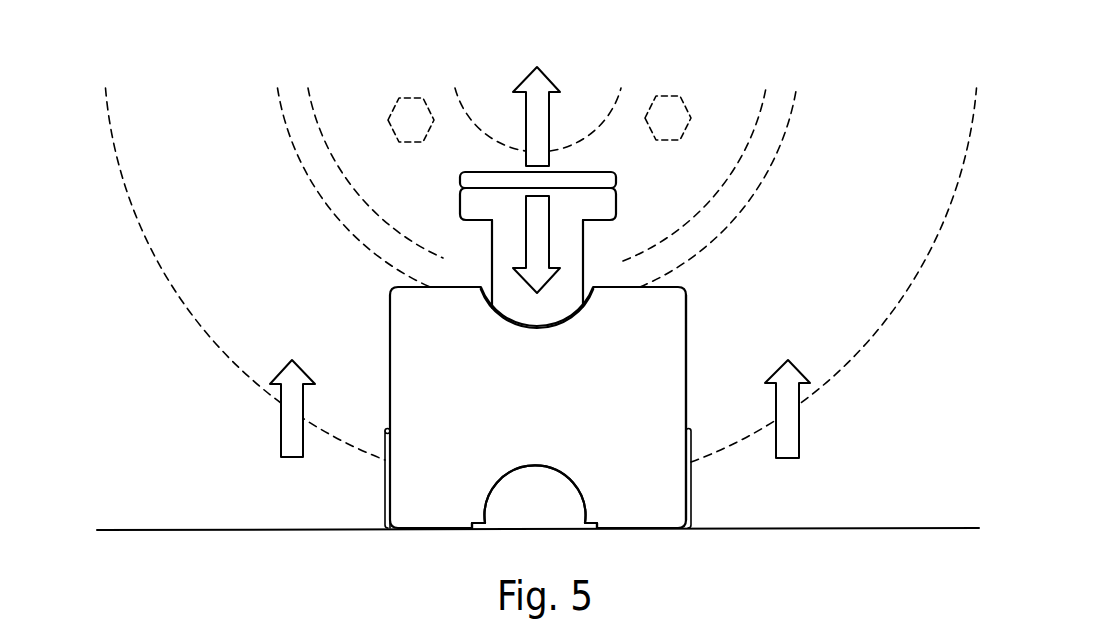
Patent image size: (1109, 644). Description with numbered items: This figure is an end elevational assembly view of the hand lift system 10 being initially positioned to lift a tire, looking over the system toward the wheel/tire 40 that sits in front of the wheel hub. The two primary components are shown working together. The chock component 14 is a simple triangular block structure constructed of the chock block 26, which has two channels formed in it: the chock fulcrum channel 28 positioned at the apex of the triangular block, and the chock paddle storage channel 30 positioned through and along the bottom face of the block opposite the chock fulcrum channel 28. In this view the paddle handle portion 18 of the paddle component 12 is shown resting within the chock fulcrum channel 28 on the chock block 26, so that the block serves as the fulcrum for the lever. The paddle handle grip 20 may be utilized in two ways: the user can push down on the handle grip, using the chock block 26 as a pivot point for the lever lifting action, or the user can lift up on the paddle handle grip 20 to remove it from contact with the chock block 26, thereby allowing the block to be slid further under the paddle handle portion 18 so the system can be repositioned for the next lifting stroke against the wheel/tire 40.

The hand lift system 10 is at (755, 293).
The paddle component 12 is at (457, 245).
The chock component 14 is at (377, 359).
The paddle handle portion 18 is at (583, 248).
The paddle handle grip 20 is at (590, 170).
The chock block 26 is at (685, 404).
The chock fulcrum channel 28 is at (560, 303).
The chock paddle storage channel 30 is at (535, 509).
The wheel/tire 40 is at (168, 235).